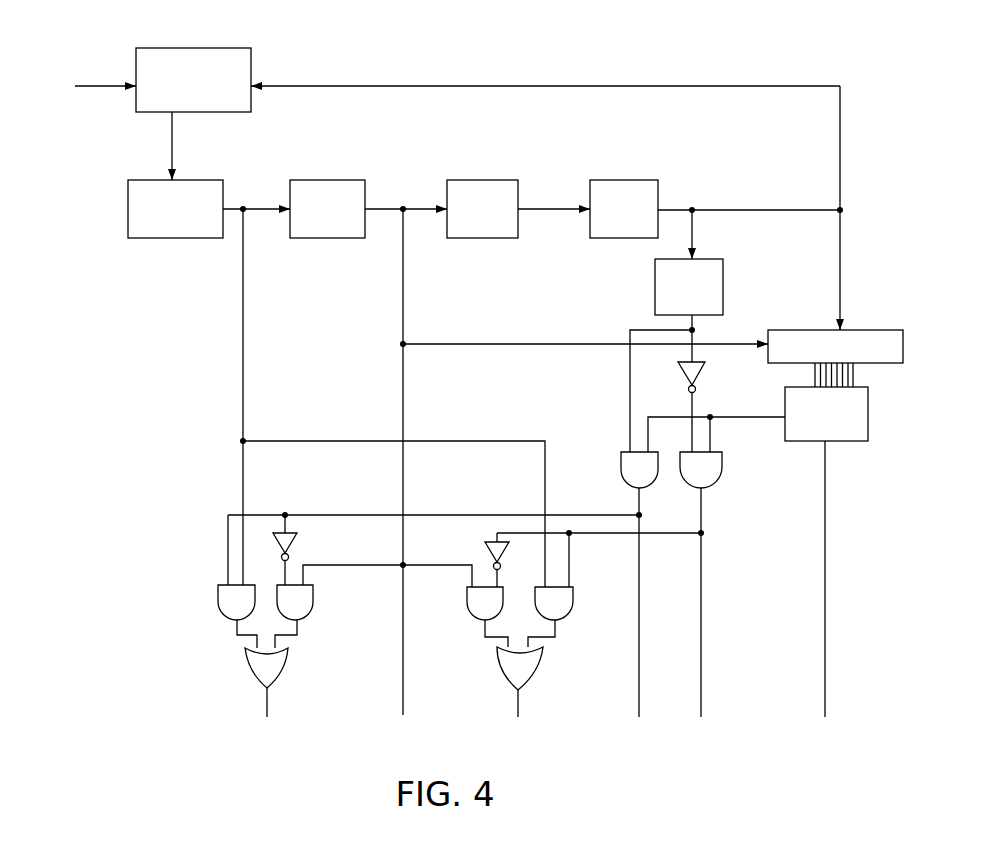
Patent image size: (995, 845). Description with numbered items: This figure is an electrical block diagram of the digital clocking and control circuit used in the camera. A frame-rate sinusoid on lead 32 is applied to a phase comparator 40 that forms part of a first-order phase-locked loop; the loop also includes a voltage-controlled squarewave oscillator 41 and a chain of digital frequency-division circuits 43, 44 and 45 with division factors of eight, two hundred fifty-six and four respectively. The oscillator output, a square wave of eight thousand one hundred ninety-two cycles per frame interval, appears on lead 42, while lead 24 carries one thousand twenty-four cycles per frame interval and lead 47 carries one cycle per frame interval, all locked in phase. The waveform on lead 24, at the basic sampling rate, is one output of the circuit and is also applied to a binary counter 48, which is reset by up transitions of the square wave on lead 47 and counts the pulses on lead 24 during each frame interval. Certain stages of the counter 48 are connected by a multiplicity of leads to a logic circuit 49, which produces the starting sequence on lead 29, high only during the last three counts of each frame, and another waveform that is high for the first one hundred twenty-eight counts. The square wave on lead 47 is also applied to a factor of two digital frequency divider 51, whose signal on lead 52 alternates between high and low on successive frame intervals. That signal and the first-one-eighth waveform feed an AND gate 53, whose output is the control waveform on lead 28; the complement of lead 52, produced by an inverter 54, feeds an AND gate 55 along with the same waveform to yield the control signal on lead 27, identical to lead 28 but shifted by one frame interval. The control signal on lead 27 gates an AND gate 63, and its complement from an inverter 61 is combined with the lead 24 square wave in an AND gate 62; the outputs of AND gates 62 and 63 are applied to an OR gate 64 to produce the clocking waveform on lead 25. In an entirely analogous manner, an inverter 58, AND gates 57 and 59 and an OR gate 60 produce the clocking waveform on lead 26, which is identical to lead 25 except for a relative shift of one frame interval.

The lead 32 is at (91, 80).
The phase comparator 40 is at (226, 49).
The voltage-controlled squarewave oscillator 41 is at (210, 180).
The lead 42 is at (256, 204).
The digital frequency-division circuit 43 is at (333, 180).
The lead 24 is at (394, 205).
The digital frequency-division circuit 44 is at (496, 180).
The digital frequency-division circuit 45 is at (629, 180).
The lead 47 is at (745, 209).
The factor of two digital frequency divider 51 is at (652, 275).
The lead 52 is at (640, 328).
The binary counter 48 is at (906, 342).
The logic circuit 49 is at (872, 402).
The inverter 54 is at (702, 373).
The AND gate 53 is at (620, 461).
The AND gate 55 is at (725, 471).
The lead 28 is at (440, 617).
The lead 27 is at (605, 617).
The lead 29 is at (821, 593).
The AND gate 57 is at (218, 598).
The inverter 58 is at (297, 546).
The AND gate 59 is at (315, 598).
The OR gate 60 is at (290, 659).
The lead 26 is at (264, 717).
The inverter 61 is at (488, 553).
The AND gate 62 is at (466, 603).
The AND gate 63 is at (576, 605).
The OR gate 64 is at (546, 658).
The lead 25 is at (517, 718).